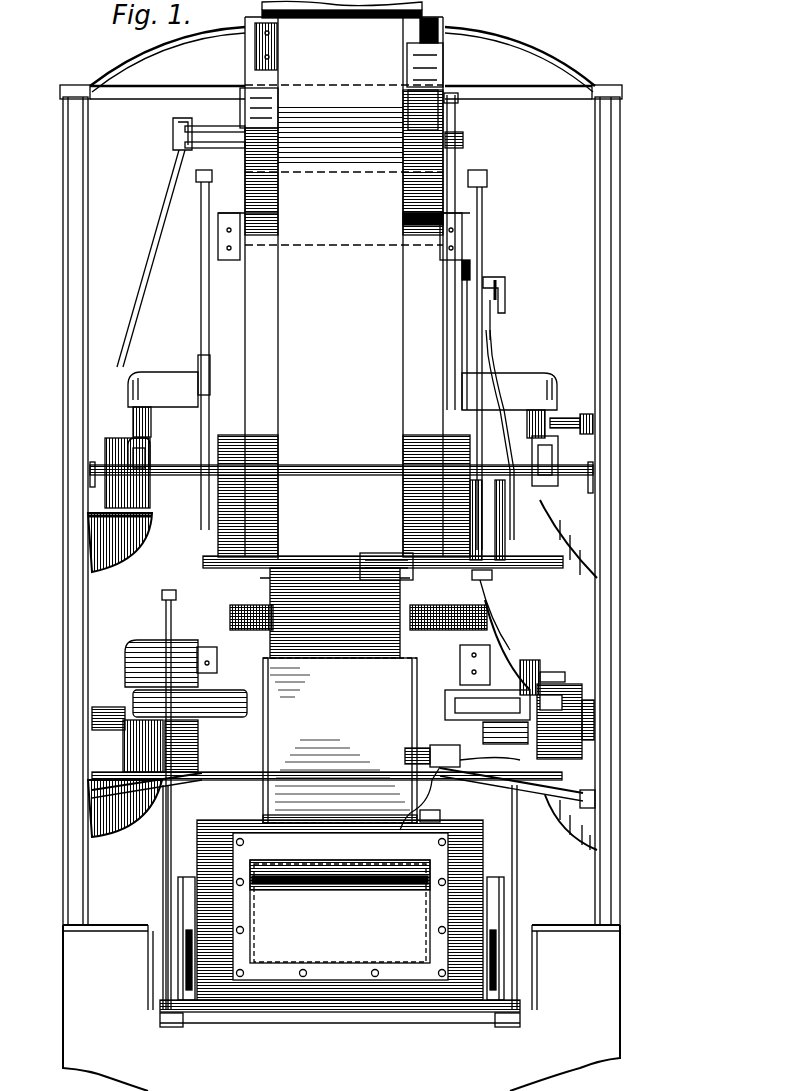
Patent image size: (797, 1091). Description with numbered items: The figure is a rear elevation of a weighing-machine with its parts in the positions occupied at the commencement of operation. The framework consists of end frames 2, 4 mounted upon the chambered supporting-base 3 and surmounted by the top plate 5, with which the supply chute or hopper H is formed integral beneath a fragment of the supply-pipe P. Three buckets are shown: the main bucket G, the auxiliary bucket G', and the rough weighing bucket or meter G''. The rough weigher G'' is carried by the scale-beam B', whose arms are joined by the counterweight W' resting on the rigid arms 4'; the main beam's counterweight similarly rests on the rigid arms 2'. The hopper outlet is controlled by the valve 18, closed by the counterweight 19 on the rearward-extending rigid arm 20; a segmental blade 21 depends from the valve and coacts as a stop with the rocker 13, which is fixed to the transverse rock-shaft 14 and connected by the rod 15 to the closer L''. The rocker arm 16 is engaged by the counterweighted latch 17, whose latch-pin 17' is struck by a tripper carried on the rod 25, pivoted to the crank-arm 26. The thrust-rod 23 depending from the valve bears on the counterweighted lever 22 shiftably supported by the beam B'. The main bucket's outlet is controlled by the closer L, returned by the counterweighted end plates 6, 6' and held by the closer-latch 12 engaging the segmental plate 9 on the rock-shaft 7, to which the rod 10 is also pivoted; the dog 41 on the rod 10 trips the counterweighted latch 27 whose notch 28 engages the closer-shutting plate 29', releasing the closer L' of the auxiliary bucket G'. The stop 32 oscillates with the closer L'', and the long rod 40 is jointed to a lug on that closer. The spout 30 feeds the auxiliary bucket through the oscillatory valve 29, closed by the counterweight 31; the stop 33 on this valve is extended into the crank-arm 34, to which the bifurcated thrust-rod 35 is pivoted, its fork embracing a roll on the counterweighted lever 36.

The end frame 2 is at (614, 505).
The chambered supporting-base 3 is at (604, 995).
The end frame 4 is at (64, 505).
The top plate 5 is at (148, 70).
The supply-pipe P is at (415, 10).
The supply chute or hopper H is at (255, 62).
The counterweight 19 is at (418, 62).
The valve 18 is at (255, 113).
The rigid arm 20 is at (420, 98).
The transverse rock-shaft 14 is at (415, 220).
The segmental blade 21 is at (470, 165).
The thrust-rod 23 is at (150, 250).
The rod 15 is at (198, 323).
The crank-arm 26 is at (462, 268).
The rocker 13 is at (464, 295).
The arm 16 is at (505, 305).
The latch-pin 17' is at (519, 287).
The counterweighted latch 17 is at (461, 320).
The rod 25 is at (497, 365).
The spout 30 is at (344, 288).
The rough weighing bucket or meter G'' is at (195, 342).
The counterweighted lever 22 is at (122, 445).
The scale-beam B' is at (156, 446).
The counterweight W' is at (342, 450).
The rod 40 is at (540, 560).
The closer L'' is at (146, 542).
The counterweight 31 is at (368, 560).
The oscillatory valve 29 is at (358, 626).
The transverse rock-shaft 7 is at (240, 635).
The counterweighted latch 27 is at (455, 770).
The rigid arms 2' is at (342, 820).
The rod 10 is at (163, 857).
The main bucket G is at (352, 910).
The rigid arms 4' is at (345, 764).
The counterweighted end plate 6' is at (164, 938).
The counterweighted end plate 6 is at (511, 938).
The closer L is at (340, 1020).
The stop 33 is at (478, 672).
The crank-arm 34 is at (495, 585).
The stop 32 is at (520, 655).
The bifurcated thrust-rod 35 is at (540, 672).
The dog 41 is at (556, 677).
The segmental plate 9 is at (487, 705).
The counterweighted lever 36 is at (565, 700).
The closer-latch 12 is at (485, 732).
The notch 28 is at (445, 770).
The counterweighted closer-shutting plate 29' is at (482, 821).
The auxiliary bucket G' is at (340, 740).
The closer L' is at (340, 804).